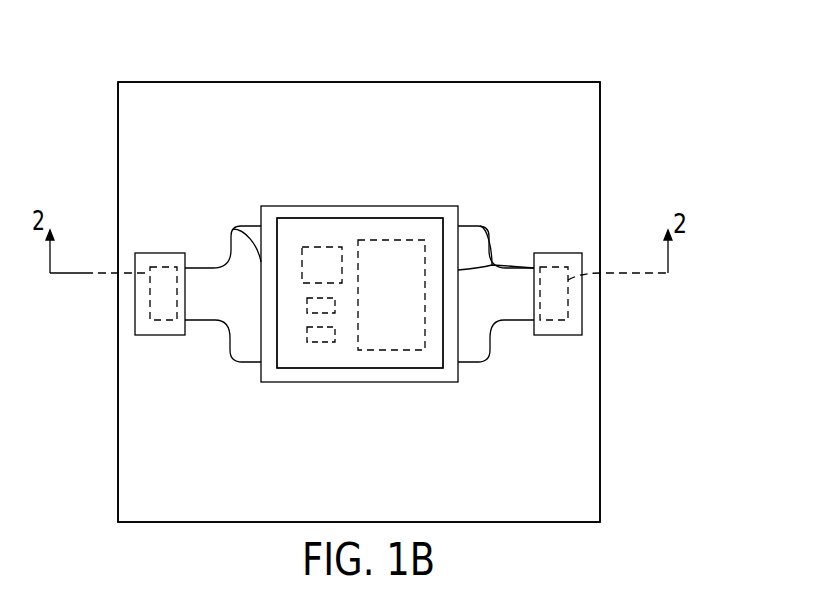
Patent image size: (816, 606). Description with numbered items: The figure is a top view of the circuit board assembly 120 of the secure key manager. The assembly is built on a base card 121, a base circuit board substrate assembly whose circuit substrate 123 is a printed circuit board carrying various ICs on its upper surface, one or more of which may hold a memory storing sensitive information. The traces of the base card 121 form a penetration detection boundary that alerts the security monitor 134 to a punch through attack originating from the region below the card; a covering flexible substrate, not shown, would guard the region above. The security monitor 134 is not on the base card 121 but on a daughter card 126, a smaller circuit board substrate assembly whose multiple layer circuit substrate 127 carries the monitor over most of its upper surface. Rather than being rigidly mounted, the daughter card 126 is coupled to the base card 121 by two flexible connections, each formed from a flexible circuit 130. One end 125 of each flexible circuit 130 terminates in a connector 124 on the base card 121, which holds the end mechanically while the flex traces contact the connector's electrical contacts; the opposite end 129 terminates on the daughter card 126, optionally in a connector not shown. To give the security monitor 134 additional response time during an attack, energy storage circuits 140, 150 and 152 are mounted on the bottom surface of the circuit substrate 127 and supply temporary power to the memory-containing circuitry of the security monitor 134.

The circuit board assembly 120 is at (428, 69).
The base card 121 is at (362, 82).
The circuit substrate 123 is at (200, 82).
The connector 124 is at (637, 112).
The end of flexible circuit 125 is at (638, 220).
The daughter card 126 is at (443, 206).
The circuit substrate 127 is at (430, 206).
The end of flexible circuit 129 is at (508, 249).
The flexible circuit 130 is at (229, 336).
The security monitor 134 is at (337, 218).
The energy storage circuit 140 is at (400, 240).
The energy storage circuit 150 is at (320, 247).
The energy storage circuit 152 is at (307, 305).